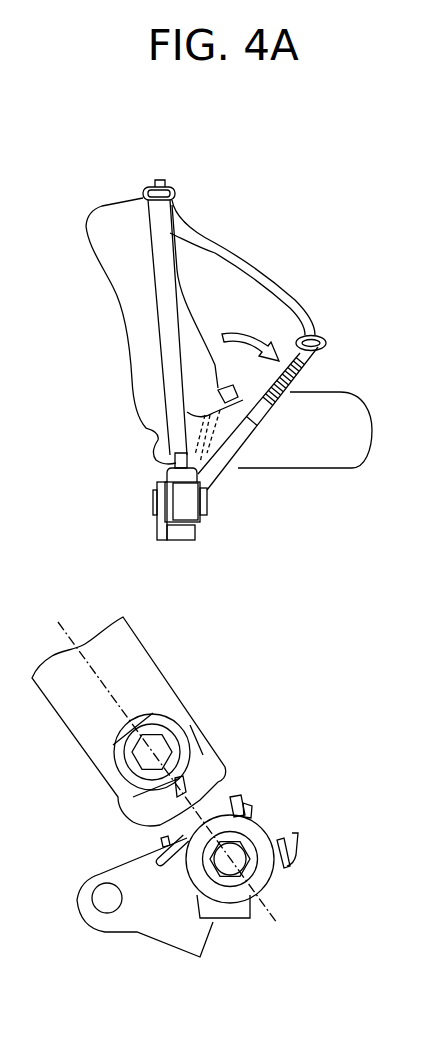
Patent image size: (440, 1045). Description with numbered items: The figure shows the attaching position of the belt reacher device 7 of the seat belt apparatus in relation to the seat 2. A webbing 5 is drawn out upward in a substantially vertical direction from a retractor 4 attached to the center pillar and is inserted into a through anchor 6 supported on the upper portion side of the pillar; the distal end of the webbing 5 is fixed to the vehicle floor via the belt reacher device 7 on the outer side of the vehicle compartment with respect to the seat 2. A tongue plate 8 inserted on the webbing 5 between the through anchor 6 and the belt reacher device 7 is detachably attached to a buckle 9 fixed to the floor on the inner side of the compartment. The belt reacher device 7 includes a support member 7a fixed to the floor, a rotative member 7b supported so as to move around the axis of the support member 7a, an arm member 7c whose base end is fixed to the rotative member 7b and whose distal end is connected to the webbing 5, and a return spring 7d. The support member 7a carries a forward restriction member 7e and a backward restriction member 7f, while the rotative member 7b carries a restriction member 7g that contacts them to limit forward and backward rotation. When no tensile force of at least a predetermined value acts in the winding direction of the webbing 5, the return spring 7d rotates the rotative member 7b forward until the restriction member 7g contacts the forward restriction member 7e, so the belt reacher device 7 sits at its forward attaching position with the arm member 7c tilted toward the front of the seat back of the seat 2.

The seat 2 is at (117, 217).
The retractor 4 is at (151, 498).
The webbing 5 is at (238, 265).
The through anchor 6 is at (173, 187).
The belt reacher device 7 is at (228, 455).
The support member 7a is at (100, 874).
The rotative member 7b is at (237, 915).
The arm member 7c is at (148, 680).
The return spring 7d is at (160, 842).
The forward restriction member 7e is at (237, 797).
The backward restriction member 7f is at (293, 868).
The restriction member 7g is at (253, 810).
The tongue plate 8 is at (326, 345).
The buckle 9 is at (222, 396).